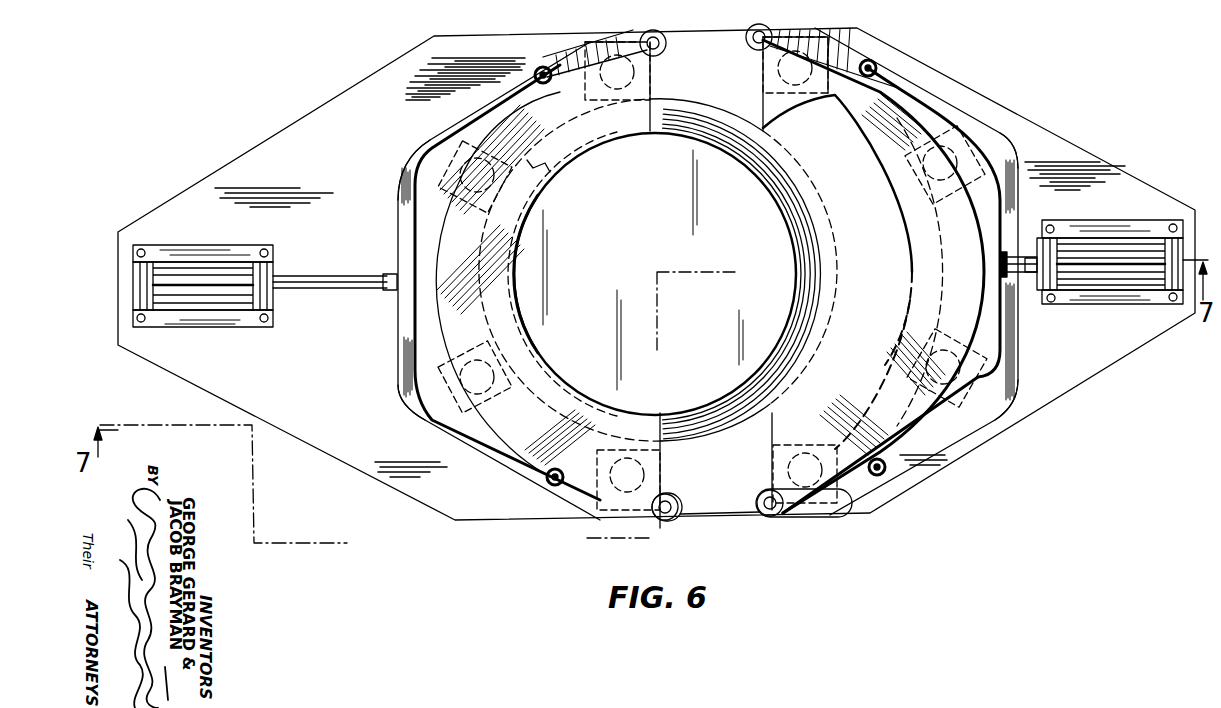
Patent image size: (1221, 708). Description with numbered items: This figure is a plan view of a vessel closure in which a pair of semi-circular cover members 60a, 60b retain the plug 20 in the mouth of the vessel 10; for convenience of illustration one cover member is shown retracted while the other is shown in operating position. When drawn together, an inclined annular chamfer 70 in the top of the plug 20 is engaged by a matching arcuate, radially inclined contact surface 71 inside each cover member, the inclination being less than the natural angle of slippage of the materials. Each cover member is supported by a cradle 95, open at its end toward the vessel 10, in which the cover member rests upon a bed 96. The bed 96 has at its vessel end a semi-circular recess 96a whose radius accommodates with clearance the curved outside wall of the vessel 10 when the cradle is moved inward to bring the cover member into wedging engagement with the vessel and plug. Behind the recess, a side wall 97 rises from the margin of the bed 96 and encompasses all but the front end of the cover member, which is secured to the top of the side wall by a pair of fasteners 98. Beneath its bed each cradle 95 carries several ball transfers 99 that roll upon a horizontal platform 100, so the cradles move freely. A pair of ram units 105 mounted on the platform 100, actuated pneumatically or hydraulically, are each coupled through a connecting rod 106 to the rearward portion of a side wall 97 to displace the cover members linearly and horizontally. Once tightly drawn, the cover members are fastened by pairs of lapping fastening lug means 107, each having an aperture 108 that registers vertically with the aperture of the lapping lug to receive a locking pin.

The vessel 10 is at (838, 282).
The plug 20 is at (672, 262).
The inclined annular chamfer 70 is at (800, 312).
The contact surface 71 is at (535, 163).
The cradle 95 is at (372, 164).
The bed 96 is at (430, 347).
The semi-circular recess 96a is at (519, 269).
The side wall 97 is at (418, 147).
The fasteners 98 is at (543, 67).
The ball transfers 99 is at (460, 172).
The horizontal platform 100 is at (720, 515).
The ram units 105 is at (182, 298).
The connecting rod 106 is at (345, 268).
The fastening lug means 107 is at (668, 15).
The aperture 108 is at (640, 48).
The cover member 60a is at (433, 326).
The cover member 60b is at (970, 318).